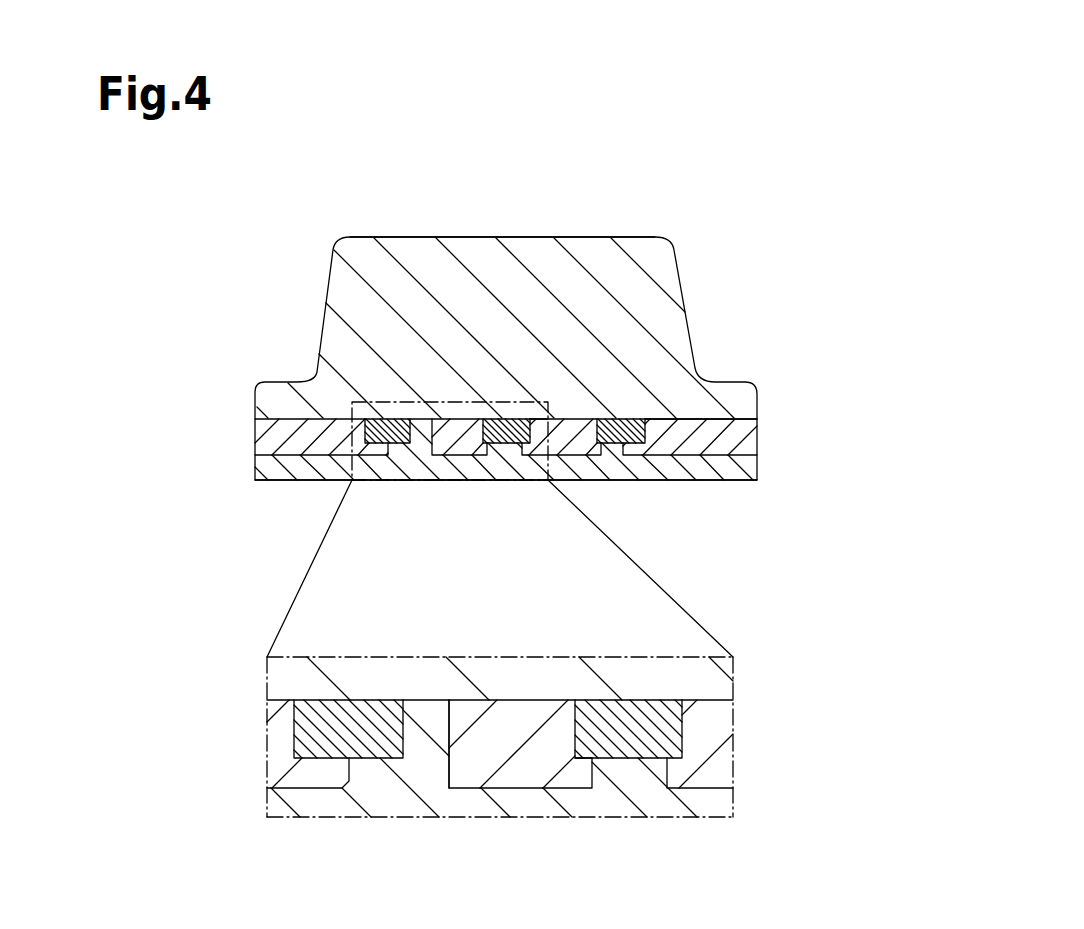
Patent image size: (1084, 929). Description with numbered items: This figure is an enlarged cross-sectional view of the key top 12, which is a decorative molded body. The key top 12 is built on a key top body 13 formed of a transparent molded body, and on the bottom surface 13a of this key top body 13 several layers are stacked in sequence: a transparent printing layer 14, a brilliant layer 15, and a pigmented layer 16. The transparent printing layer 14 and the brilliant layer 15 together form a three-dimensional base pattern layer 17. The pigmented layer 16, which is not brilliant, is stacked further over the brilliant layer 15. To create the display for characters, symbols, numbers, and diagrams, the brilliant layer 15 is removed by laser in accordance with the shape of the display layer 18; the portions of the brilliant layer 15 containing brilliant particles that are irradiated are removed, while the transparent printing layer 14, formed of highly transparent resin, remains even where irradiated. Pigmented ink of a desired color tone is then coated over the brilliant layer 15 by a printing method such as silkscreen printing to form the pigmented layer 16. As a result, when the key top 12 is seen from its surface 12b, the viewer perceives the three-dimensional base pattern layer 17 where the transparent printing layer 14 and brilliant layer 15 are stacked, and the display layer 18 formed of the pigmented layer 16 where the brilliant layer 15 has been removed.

The key top 12 is at (755, 192).
The surface of the key top 12b is at (540, 237).
The key top body 13 is at (327, 283).
The bottom surface of the key top body 13a is at (715, 421).
The transparent printing layer 14 is at (362, 427).
The brilliant layer 15 is at (255, 442).
The pigmented layer 16 is at (255, 468).
The three-dimensional base pattern layer 17 is at (140, 385).
The display layer 18 is at (533, 420).